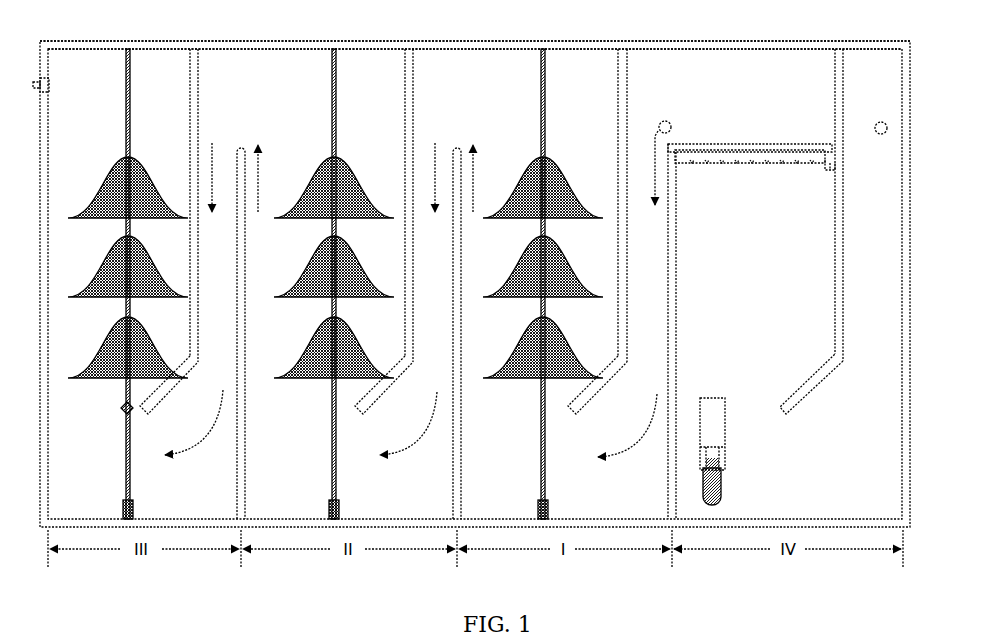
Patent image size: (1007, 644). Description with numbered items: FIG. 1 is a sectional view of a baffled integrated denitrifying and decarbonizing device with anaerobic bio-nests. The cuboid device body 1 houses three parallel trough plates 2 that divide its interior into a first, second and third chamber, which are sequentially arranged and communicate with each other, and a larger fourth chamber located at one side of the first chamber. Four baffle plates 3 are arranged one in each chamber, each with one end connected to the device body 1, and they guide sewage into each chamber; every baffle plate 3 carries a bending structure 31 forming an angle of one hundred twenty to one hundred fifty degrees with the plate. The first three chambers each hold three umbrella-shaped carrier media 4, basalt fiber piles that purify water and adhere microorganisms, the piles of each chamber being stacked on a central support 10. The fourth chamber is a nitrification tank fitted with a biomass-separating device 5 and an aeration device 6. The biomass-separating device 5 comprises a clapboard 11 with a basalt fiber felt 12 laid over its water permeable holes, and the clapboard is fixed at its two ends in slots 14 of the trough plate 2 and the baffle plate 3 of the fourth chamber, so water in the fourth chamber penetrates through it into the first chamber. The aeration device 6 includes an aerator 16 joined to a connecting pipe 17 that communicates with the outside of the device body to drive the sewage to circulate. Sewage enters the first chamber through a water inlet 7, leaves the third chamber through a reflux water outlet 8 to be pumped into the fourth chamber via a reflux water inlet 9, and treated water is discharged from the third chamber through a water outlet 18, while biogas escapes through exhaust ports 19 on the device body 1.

The device body 1 is at (910, 207).
The trough plate 2 is at (692, 339).
The baffle plate 3 is at (860, 80).
The carrier medium 4 is at (515, 186).
The biomass-separating device 5 is at (751, 195).
The aeration device 6 is at (756, 452).
The water inlet 7 is at (672, 127).
The reflux water outlet 8 is at (120, 409).
The reflux water inlet 9 is at (888, 127).
The central shaft 10 is at (562, 100).
The clapboard 11 is at (793, 160).
The basalt fiber felt 12 is at (752, 152).
The slot 14 is at (683, 158).
The aerator 16 is at (712, 423).
The connecting pipe 17 is at (780, 452).
The water outlet 18 is at (50, 85).
The exhaust port 19 is at (778, 47).
The bending structure 31 is at (613, 409).